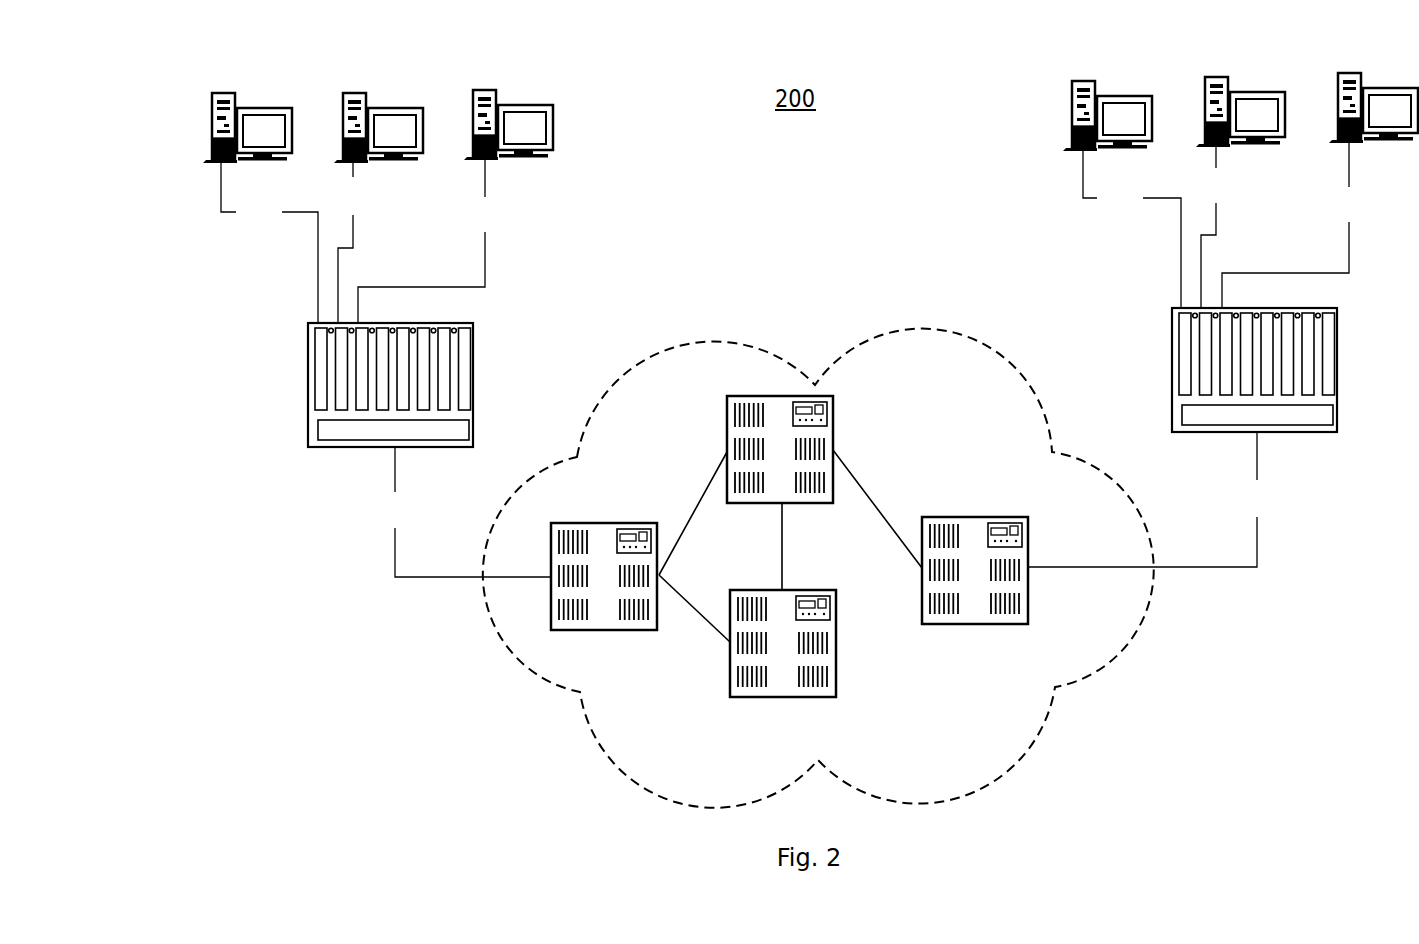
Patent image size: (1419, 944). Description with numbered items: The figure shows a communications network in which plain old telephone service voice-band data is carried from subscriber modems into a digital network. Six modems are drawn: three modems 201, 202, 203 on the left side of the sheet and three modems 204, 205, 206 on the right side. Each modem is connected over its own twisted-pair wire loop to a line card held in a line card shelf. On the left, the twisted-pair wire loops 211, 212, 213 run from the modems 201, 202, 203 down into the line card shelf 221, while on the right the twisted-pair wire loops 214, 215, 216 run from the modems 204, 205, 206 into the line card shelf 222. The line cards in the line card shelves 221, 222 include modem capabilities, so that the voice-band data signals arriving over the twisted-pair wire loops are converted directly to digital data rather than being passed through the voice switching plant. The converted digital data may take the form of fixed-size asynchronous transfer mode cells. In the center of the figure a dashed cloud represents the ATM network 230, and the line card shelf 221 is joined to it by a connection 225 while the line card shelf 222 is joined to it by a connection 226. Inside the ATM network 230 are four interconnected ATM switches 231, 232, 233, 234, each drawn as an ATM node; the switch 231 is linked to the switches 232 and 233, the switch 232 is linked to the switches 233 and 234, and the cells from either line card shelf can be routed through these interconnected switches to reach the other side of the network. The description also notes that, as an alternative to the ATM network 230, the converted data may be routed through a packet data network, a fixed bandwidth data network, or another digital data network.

The modem 201 is at (222, 93).
The modem 202 is at (353, 92).
The modem 203 is at (483, 90).
The modem 204 is at (1085, 81).
The modem 205 is at (1217, 77).
The modem 206 is at (1347, 73).
The twisted-pair wire loop 211 is at (269, 243).
The twisted-pair wire loop 212 is at (352, 243).
The twisted-pair wire loop 213 is at (430, 241).
The twisted-pair wire loop 214 is at (1132, 229).
The twisted-pair wire loop 215 is at (1215, 227).
The twisted-pair wire loop 216 is at (1295, 225).
The line card shelf 221 is at (308, 385).
The line card shelf 222 is at (1172, 370).
The link 225 is at (463, 512).
The link 226 is at (1152, 500).
The ATM network 230 is at (711, 330).
The ATM switch 231 is at (605, 523).
The ATM switch 232 is at (727, 403).
The ATM switch 233 is at (750, 590).
The ATM switch 234 is at (948, 517).